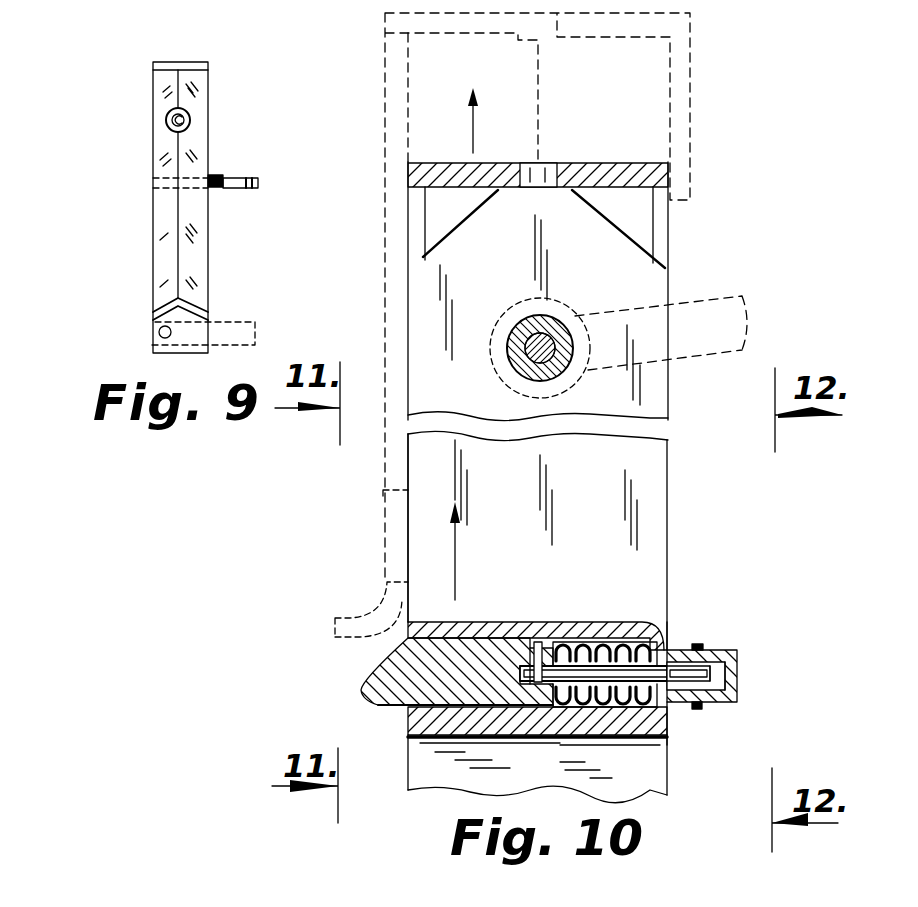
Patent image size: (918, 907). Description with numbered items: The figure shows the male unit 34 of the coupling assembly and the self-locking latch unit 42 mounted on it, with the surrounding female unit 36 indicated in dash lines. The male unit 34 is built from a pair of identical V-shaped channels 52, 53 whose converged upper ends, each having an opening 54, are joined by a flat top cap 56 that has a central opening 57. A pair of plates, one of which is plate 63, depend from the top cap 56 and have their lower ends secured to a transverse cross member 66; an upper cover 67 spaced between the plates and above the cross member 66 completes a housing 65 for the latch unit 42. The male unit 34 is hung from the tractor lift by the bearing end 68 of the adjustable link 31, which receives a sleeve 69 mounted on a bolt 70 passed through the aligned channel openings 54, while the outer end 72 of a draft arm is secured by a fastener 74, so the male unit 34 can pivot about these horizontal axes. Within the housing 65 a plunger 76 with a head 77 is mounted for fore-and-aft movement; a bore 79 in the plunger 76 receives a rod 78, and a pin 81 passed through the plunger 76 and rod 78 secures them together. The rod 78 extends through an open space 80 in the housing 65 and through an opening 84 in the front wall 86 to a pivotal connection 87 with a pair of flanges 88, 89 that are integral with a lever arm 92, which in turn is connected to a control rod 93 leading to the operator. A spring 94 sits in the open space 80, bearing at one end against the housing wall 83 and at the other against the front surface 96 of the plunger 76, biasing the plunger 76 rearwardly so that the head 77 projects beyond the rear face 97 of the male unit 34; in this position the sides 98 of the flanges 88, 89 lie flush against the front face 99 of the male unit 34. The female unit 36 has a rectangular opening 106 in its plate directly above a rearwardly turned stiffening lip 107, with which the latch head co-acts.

In FIG. 10, the adjustable link 31 is at (690, 362).
In FIG. 9, the male unit 34 is at (55, 150).
In FIG. 10, the male unit 34 is at (682, 500).
In FIG. 10, the female unit 36 is at (700, 103).
In FIG. 10, the self-locking latch unit 42 is at (352, 679).
In FIG. 10, the V-shaped channel 52 is at (414, 222).
In FIG. 9, the V-shaped channel 53 is at (168, 243).
In FIG. 9, the opening 54 is at (170, 112).
In FIG. 9, the flat top cap 56 is at (182, 62).
In FIG. 10, the flat top cap 56 is at (621, 177).
In FIG. 10, the central opening 57 is at (548, 165).
In FIG. 10, the plate 63 is at (643, 274).
In FIG. 10, the housing 65 is at (570, 570).
In FIG. 10, the cross member 66 is at (495, 735).
In FIG. 10, the upper cover 67 is at (442, 632).
In FIG. 10, the bearing end 68 is at (525, 300).
In FIG. 10, the sleeve 69 is at (522, 328).
In FIG. 9, the bolt 70 is at (187, 119).
In FIG. 10, the bolt 70 is at (528, 352).
In FIG. 9, the outer end of draft arm 72 is at (246, 320).
In FIG. 9, the fastener 74 is at (158, 338).
In FIG. 10, the plunger 76 is at (483, 626).
In FIG. 9, the head 77 is at (153, 180).
In FIG. 10, the head 77 is at (372, 702).
In FIG. 10, the rod 78 is at (616, 737).
In FIG. 10, the bore 79 is at (514, 735).
In FIG. 10, the open space 80 is at (596, 636).
In FIG. 10, the pin 81 is at (542, 640).
In FIG. 10, the housing wall 83 is at (523, 768).
In FIG. 10, the opening 84 is at (666, 650).
In FIG. 10, the front wall 86 is at (668, 738).
In FIG. 10, the pivotal connection 87 is at (697, 650).
In FIG. 10, the flange 88 is at (722, 650).
In FIG. 10, the flange 89 is at (728, 704).
In FIG. 9, the lever arm 92 is at (216, 175).
In FIG. 10, the lever arm 92 is at (740, 650).
In FIG. 9, the rod 93 is at (247, 181).
In FIG. 10, the spring 94 is at (624, 642).
In FIG. 10, the front surface 96 is at (576, 628).
In FIG. 10, the rear face 97 is at (405, 774).
In FIG. 10, the side 98 is at (700, 710).
In FIG. 10, the front face 99 is at (667, 455).
In FIG. 10, the rectangular opening 106 is at (383, 510).
In FIG. 10, the stiffening lip 107 is at (335, 624).